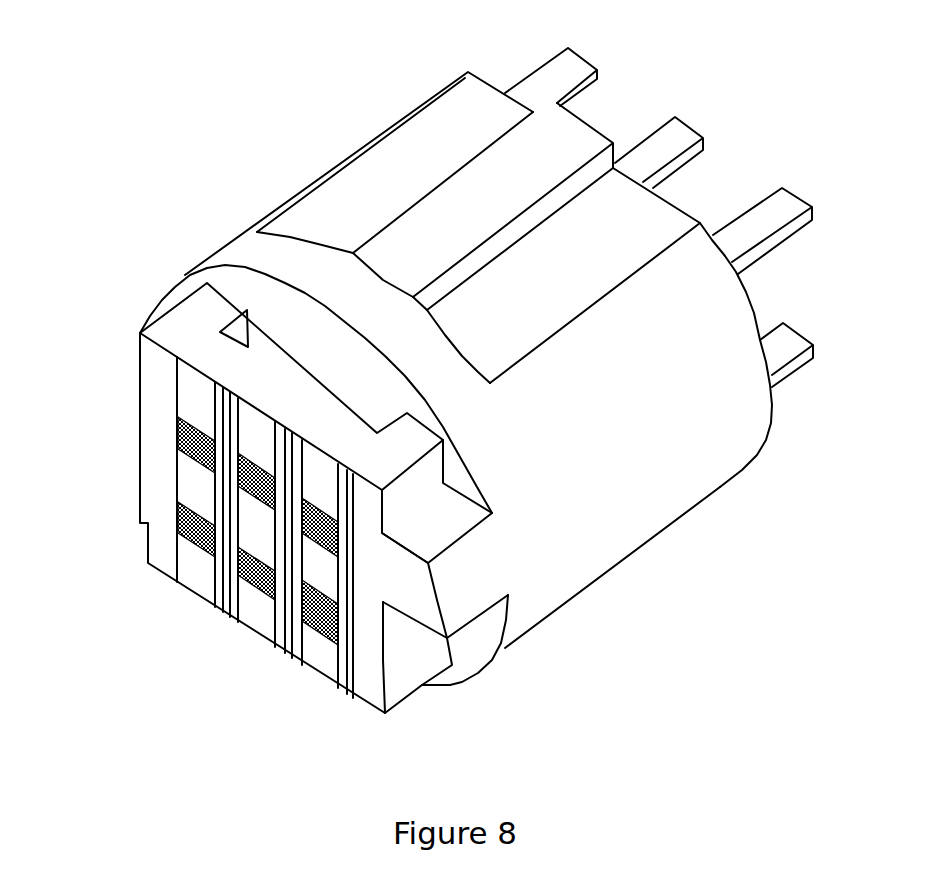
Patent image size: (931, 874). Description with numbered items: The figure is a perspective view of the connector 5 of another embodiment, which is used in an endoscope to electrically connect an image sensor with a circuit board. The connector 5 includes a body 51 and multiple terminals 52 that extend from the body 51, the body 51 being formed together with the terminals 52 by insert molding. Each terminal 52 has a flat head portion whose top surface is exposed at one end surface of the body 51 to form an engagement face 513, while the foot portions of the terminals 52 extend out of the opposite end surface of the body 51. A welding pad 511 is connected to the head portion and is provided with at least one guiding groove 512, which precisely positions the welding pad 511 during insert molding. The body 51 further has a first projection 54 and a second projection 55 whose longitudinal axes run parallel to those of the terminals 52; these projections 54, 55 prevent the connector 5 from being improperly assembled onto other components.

The connector 5 is at (300, 165).
The body 51 is at (350, 152).
The terminals 52 is at (592, 58).
The first projection 54 is at (473, 208).
The second projection 55 is at (420, 598).
The welding pad 511 is at (178, 425).
The guiding groove 512 is at (283, 432).
The engagement face 513 is at (158, 448).